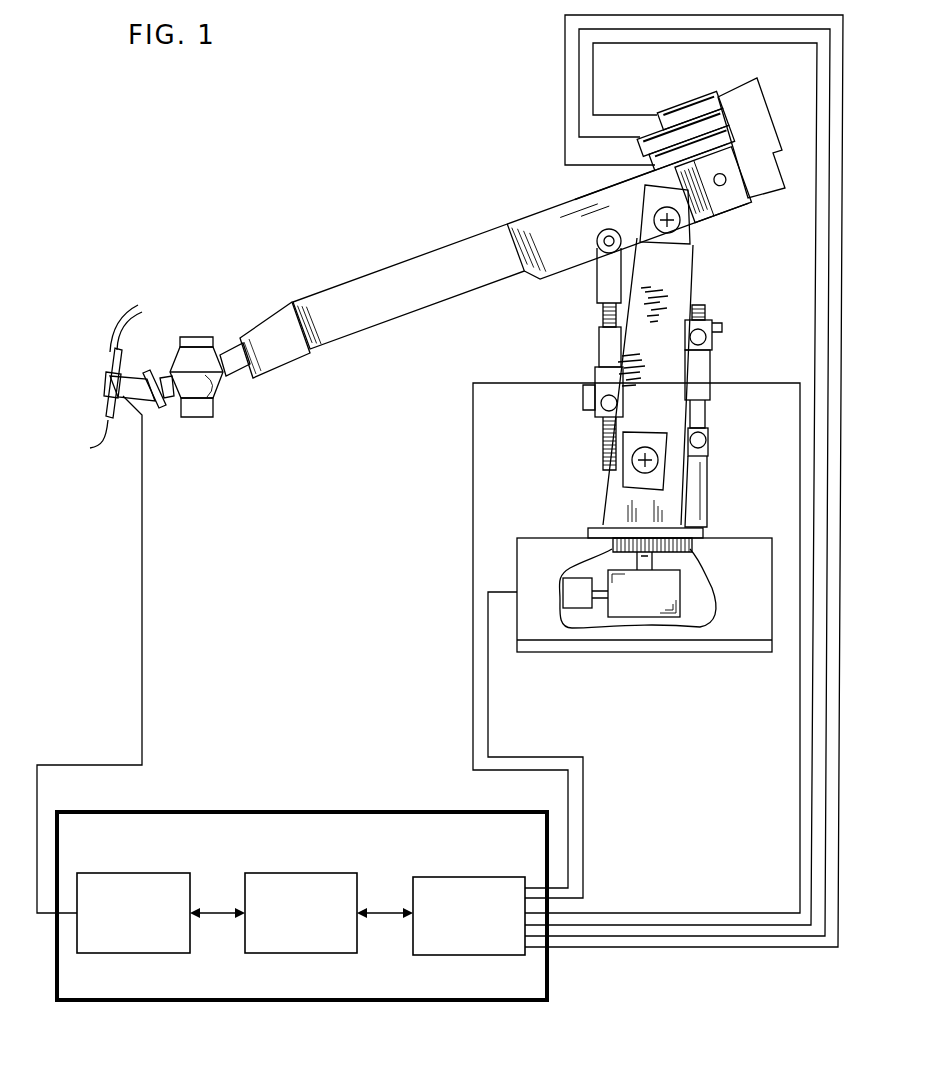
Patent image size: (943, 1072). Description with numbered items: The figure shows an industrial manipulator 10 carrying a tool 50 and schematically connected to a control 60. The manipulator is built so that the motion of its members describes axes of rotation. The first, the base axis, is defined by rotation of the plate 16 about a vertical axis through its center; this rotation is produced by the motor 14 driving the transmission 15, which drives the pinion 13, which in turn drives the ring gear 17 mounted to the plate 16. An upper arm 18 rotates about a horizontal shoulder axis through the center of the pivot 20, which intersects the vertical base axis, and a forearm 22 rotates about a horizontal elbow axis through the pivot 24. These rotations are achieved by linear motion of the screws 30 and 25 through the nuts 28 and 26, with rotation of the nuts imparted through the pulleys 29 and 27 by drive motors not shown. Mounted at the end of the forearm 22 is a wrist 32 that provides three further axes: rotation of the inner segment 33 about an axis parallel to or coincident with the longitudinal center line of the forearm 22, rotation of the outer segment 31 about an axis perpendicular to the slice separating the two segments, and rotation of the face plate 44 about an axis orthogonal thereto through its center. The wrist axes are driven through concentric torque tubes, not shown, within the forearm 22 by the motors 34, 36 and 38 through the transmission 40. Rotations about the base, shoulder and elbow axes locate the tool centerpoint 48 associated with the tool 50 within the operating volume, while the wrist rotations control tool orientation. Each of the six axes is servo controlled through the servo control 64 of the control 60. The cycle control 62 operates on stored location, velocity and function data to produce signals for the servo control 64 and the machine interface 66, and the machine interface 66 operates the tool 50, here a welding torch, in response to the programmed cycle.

The manipulator 10 is at (316, 160).
The pinion 13 is at (672, 562).
The motor 14 is at (567, 606).
The transmission 15 is at (687, 600).
The plate 16 is at (703, 530).
The ring gear 17 is at (615, 545).
The upper arm 18 is at (691, 292).
The pivot 20 is at (636, 476).
The forearm 22 is at (417, 262).
The pivot 24 is at (668, 233).
The screw 25 is at (704, 312).
The nut 26 is at (712, 349).
The pulley 27 is at (714, 326).
The nut 28 is at (597, 367).
The pulley 29 is at (588, 403).
The screw 30 is at (600, 320).
The outer segment 31 is at (226, 396).
The wrist 32 is at (227, 418).
The inner segment 33 is at (172, 365).
The motor 34 is at (661, 113).
The motor 36 is at (645, 137).
The motor 38 is at (648, 173).
The transmission 40 is at (778, 112).
The face plate 44 is at (159, 405).
The tool centerpoint 48 is at (92, 401).
The tool 50 is at (132, 295).
The control 60 is at (385, 812).
The cycle control 62 is at (271, 873).
The servo control 64 is at (442, 876).
The machine interface 66 is at (105, 873).